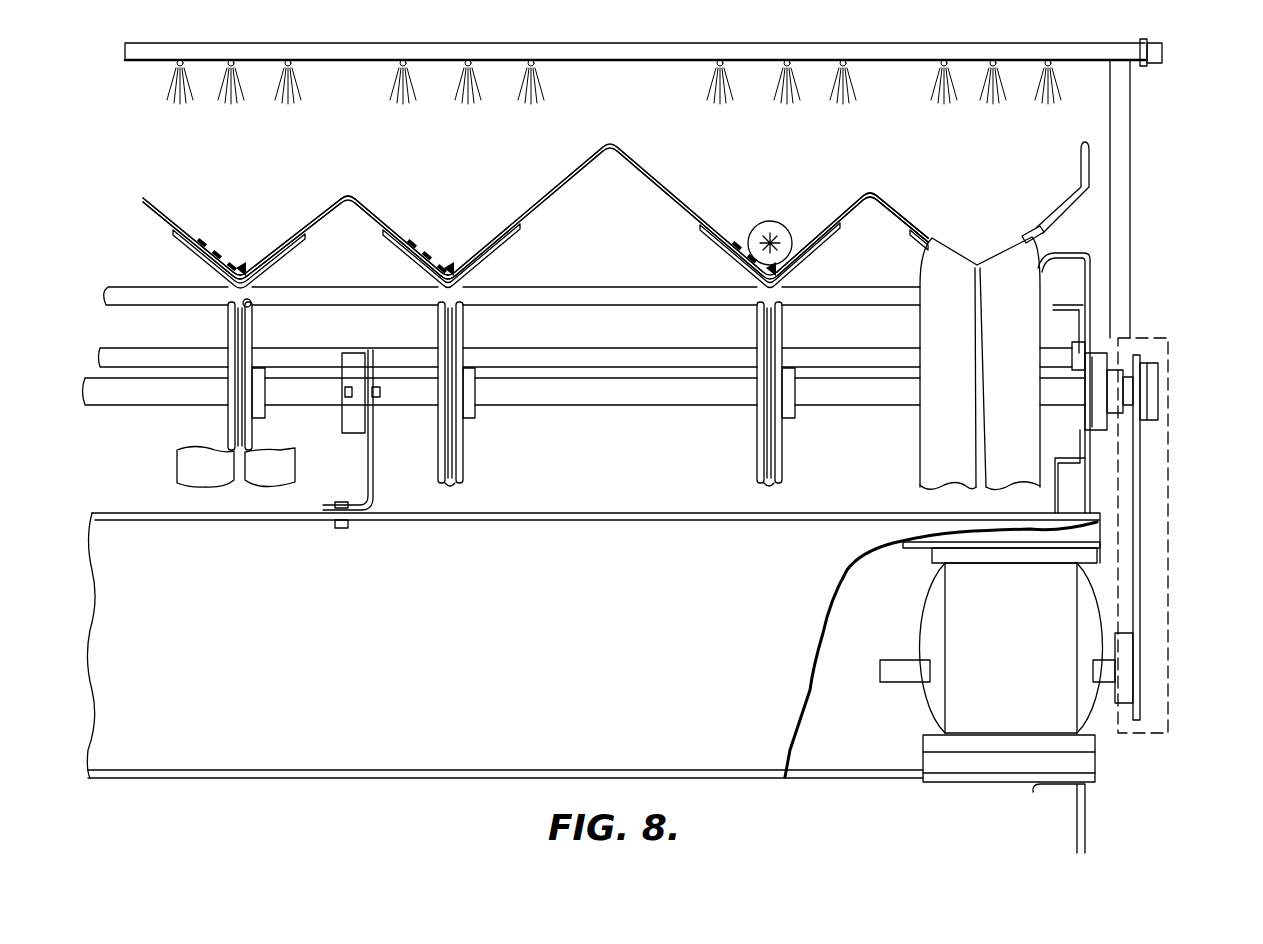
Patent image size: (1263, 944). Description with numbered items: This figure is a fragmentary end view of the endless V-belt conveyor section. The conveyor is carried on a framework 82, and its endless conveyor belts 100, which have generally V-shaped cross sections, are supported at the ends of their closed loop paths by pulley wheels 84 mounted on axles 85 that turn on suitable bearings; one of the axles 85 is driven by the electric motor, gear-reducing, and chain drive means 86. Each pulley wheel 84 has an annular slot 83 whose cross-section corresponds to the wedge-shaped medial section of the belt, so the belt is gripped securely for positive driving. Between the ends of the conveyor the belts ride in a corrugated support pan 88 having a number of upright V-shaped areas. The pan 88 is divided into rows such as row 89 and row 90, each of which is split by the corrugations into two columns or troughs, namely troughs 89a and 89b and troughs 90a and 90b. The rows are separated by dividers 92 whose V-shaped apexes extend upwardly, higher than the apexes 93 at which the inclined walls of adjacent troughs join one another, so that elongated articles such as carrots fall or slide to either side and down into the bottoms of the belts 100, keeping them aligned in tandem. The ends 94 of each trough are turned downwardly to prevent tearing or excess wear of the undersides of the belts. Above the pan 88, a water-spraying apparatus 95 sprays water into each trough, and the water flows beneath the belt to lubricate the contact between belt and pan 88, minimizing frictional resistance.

The framework 82 is at (548, 619).
The annular slot 83 is at (790, 497).
The pulley wheels 84 is at (757, 465).
The axles 85 is at (620, 390).
The electric motor, gear-reducing, and chain drive means 86 is at (1153, 662).
The corrugated support pan 88 is at (1100, 147).
The row 89 is at (845, 160).
The trough 89a is at (979, 203).
The trough 89b is at (811, 210).
The row 90 is at (361, 164).
The trough 90a is at (436, 194).
The trough 90b is at (294, 186).
The dividers 92 is at (700, 162).
The ridge 93 is at (877, 196).
The ends 94 is at (1045, 238).
The water-spraying apparatus 95 is at (1168, 62).
The endless conveyor belts 100 is at (216, 237).